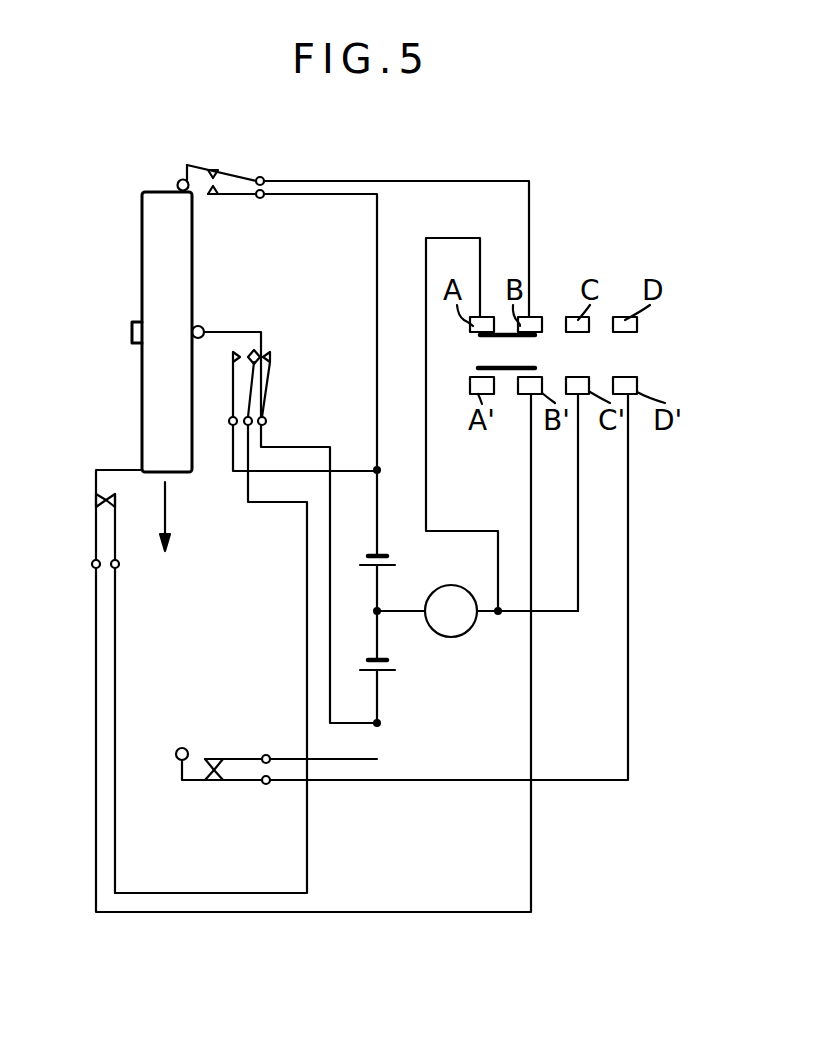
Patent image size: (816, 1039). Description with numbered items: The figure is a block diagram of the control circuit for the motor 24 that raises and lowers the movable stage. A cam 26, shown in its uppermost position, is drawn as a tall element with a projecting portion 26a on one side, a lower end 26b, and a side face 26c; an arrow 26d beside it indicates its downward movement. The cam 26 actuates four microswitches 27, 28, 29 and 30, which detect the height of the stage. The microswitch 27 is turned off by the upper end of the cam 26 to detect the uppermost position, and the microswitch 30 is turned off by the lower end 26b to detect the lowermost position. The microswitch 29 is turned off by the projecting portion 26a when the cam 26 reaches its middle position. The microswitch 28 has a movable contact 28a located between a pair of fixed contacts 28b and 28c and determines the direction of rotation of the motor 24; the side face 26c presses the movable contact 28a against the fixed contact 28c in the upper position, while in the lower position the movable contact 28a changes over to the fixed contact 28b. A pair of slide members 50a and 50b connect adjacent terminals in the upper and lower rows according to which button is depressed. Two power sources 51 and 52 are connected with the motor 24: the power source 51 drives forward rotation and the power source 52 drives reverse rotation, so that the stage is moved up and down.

The motor 24 is at (463, 589).
The cam 26 is at (139, 248).
The projecting portion 26a is at (131, 329).
The lower end 26b is at (157, 190).
The side face 26c is at (193, 268).
The direction of movement 26d is at (193, 516).
The microswitch 27 is at (235, 166).
The microswitch 28 is at (210, 355).
The movable contact 28a is at (268, 392).
The fixed contact 28b is at (248, 390).
The fixed contact 28c is at (270, 372).
The microswitch 29 is at (91, 529).
The microswitch 30 is at (228, 784).
The slide member 50a is at (501, 338).
The slide member 50b is at (523, 367).
The power source 51 is at (396, 559).
The power source 52 is at (396, 669).